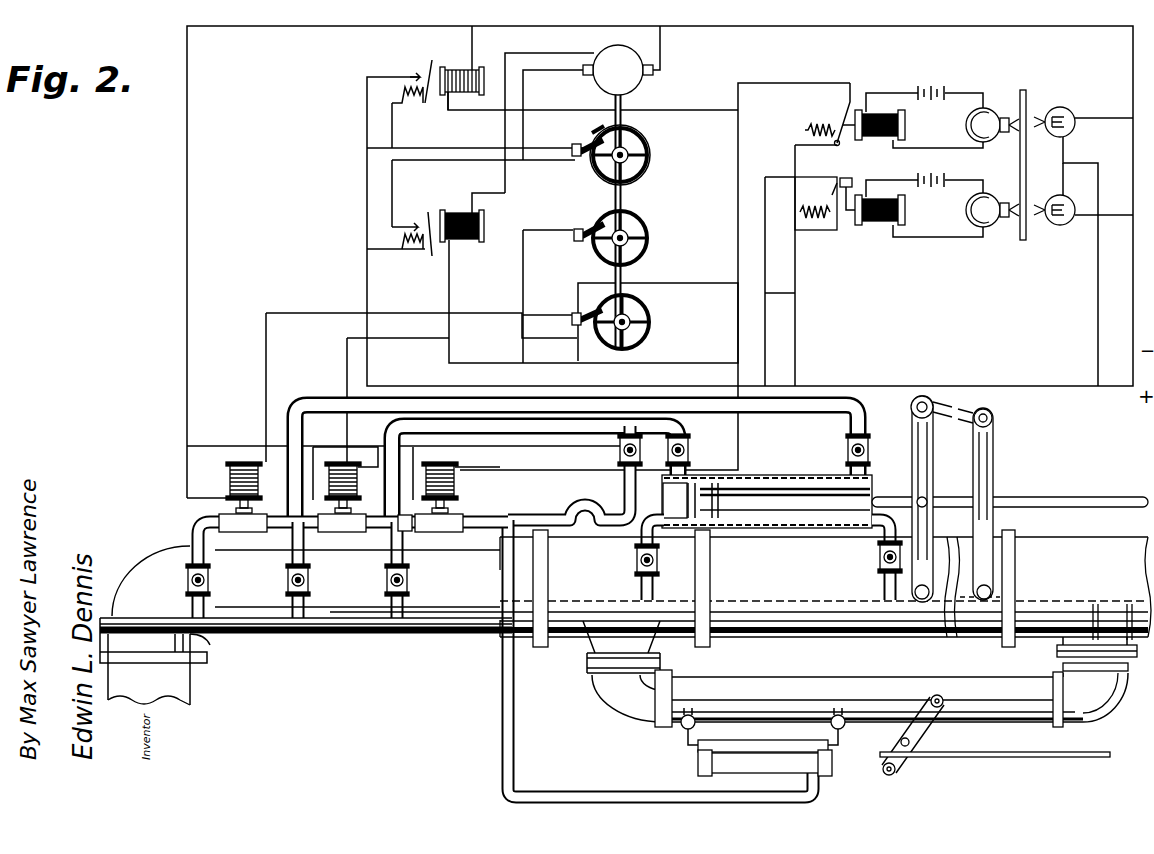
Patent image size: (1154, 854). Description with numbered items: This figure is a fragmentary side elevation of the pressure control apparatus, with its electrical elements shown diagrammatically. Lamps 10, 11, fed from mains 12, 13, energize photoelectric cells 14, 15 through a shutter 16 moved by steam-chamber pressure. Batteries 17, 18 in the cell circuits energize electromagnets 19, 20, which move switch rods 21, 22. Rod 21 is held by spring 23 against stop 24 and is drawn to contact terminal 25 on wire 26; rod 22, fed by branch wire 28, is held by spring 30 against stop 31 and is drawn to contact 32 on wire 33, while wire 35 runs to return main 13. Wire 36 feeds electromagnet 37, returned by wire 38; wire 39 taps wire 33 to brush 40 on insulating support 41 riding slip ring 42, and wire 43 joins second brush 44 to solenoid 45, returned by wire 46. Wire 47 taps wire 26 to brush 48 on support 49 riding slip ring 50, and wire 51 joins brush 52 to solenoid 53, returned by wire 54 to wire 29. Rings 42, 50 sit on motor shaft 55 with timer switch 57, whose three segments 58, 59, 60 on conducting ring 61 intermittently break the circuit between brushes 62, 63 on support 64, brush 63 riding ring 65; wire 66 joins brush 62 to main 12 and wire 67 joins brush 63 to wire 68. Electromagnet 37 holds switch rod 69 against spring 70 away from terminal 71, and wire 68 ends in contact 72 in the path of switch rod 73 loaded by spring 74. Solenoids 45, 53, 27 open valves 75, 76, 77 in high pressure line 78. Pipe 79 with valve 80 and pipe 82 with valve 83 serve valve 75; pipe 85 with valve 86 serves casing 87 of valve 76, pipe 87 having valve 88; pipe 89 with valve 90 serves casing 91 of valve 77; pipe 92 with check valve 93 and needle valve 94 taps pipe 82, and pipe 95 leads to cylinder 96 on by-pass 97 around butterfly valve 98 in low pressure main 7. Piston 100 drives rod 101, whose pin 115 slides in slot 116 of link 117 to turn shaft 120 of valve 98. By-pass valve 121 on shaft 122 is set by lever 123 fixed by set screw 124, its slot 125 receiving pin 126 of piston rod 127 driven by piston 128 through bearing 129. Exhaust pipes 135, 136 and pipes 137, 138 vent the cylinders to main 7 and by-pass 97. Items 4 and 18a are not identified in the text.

The lamp lead 4 is at (1062, 226).
The low pressure main 7 is at (1040, 540).
The lamp 10 is at (1065, 108).
The lamp 11 is at (1070, 202).
The main 12 is at (367, 178).
The return main 13 is at (752, 26).
The photoelectric cell 14 is at (983, 108).
The photoelectric cell 15 is at (985, 228).
The shutter 16 is at (1025, 92).
The local battery 17 is at (925, 86).
The local battery 18 is at (948, 180).
The rod 18a is at (965, 757).
The electromagnet 19 is at (907, 125).
The electromagnet 20 is at (907, 212).
The switch rod 21 is at (823, 145).
The switch rod 22 is at (841, 230).
The spring 23 is at (805, 130).
The stop member 24 is at (822, 115).
The contact terminal 25 is at (852, 100).
The wire 26 is at (812, 80).
The solenoid 27 is at (458, 487).
The branch wire 28 is at (797, 325).
The wire 29 is at (225, 446).
The spring 30 is at (818, 230).
The stop 31 is at (822, 200).
The contact 32 is at (843, 178).
The wire 33 is at (450, 268).
The wire 35 is at (505, 52).
The wire 36 is at (655, 110).
The electromagnet 37 is at (462, 92).
The wire 38 is at (472, 36).
The wire 39 is at (484, 225).
The brush 40 is at (605, 338).
The insulating support 41 is at (571, 320).
The commutator slip ring 42 is at (648, 326).
The wire 43 is at (500, 312).
The second brush 44 is at (582, 312).
The solenoid 45 is at (262, 478).
The wire 46 is at (185, 500).
The wire 47 is at (700, 283).
The brush 48 is at (590, 258).
The insulated support 49 is at (574, 240).
The commutator slip ring 50 is at (642, 222).
The wire 51 is at (540, 230).
The brush 52 is at (591, 230).
The solenoid 53 is at (360, 470).
The wire 54 is at (340, 465).
The motor shaft 55 is at (606, 80).
The timer switch 57 is at (660, 142).
The conducting segment 58 is at (603, 130).
The conducting segment 59 is at (649, 170).
The conducting segment 60 is at (592, 175).
The conducting slip ring 61 is at (649, 152).
The brush 62 is at (580, 148).
The brush 63 is at (578, 157).
The insulating support 64 is at (572, 160).
The ring 65 is at (612, 188).
The wire 66 is at (455, 147).
The wire 67 is at (470, 161).
The wire 68 is at (392, 186).
The switch rod 69 is at (432, 64).
The spring 70 is at (401, 93).
The contact terminal 71 is at (416, 76).
The contact 72 is at (427, 218).
The switch rod 73 is at (430, 256).
The spring 74 is at (402, 238).
The valve 75 is at (245, 533).
The valve 76 is at (323, 533).
The valve 77 is at (450, 533).
The high gas pressure line 78 is at (265, 636).
The pipe 79 is at (190, 540).
The valve 80 is at (186, 580).
The pipe 82 is at (308, 396).
The valve 83 is at (845, 449).
The pipe 85 is at (312, 580).
The valve 86 is at (350, 514).
The pipe 87 is at (548, 434).
The valve 88 is at (690, 449).
The pipe 89 is at (410, 580).
The valve 90 is at (385, 580).
The valve casing 91 is at (405, 532).
The pipe 92 is at (606, 514).
The check valve 93 is at (580, 505).
The needle valve 94 is at (618, 452).
The pipe 95 is at (503, 688).
The cylinder 96 is at (740, 774).
The by-pass 97 is at (865, 677).
The butterfly valve 98 is at (1015, 597).
The piston 100 is at (725, 510).
The piston rod 101 is at (820, 506).
The pin 115 is at (929, 498).
The slot 116 is at (973, 440).
The link 117 is at (912, 430).
The shaft 120 is at (992, 590).
The valve 121 is at (950, 705).
The shaft 122 is at (930, 700).
The lever 123 is at (900, 740).
The set screw 124 is at (955, 700).
The slot 125 is at (920, 736).
The pin 126 is at (910, 757).
The piston rod 127 is at (1020, 758).
The piston 128 is at (730, 744).
The bearing 129 is at (880, 770).
The exhaust pipe 135 is at (636, 575).
The exhaust pipe 136 is at (880, 575).
The pipe 137 is at (695, 712).
The pipe 138 is at (830, 712).